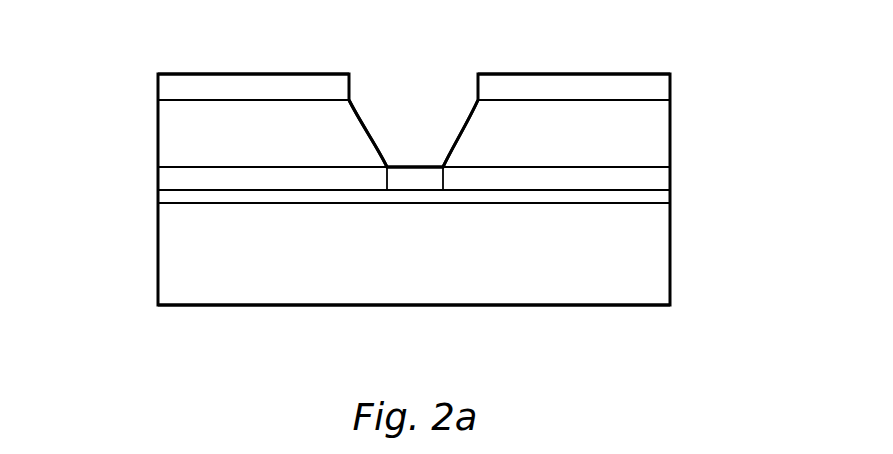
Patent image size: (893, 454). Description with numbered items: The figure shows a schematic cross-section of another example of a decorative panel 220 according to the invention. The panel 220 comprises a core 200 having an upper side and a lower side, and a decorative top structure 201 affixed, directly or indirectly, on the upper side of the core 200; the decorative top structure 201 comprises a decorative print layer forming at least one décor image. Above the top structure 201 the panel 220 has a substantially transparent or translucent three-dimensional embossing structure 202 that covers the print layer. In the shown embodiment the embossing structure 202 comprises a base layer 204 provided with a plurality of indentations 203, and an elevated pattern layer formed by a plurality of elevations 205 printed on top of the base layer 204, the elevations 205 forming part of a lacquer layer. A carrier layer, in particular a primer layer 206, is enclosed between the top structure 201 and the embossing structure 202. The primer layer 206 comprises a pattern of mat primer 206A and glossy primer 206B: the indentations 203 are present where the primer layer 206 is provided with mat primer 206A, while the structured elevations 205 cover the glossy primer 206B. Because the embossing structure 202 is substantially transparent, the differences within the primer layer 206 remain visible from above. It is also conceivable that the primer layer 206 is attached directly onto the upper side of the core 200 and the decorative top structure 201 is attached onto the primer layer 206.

The decorative panel 220 is at (122, 57).
The elevations 205 is at (267, 88).
The indentations 203 is at (418, 110).
The base layer 204 is at (240, 142).
The embossing structure 202 is at (683, 75).
The primer layer 206 is at (660, 176).
The mat primer 206A is at (417, 178).
The glossy primer 206B is at (250, 178).
The decorative top structure 201 is at (660, 198).
The core 200 is at (312, 267).